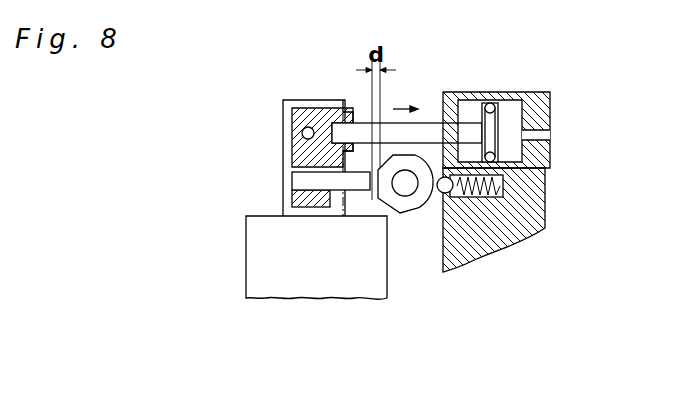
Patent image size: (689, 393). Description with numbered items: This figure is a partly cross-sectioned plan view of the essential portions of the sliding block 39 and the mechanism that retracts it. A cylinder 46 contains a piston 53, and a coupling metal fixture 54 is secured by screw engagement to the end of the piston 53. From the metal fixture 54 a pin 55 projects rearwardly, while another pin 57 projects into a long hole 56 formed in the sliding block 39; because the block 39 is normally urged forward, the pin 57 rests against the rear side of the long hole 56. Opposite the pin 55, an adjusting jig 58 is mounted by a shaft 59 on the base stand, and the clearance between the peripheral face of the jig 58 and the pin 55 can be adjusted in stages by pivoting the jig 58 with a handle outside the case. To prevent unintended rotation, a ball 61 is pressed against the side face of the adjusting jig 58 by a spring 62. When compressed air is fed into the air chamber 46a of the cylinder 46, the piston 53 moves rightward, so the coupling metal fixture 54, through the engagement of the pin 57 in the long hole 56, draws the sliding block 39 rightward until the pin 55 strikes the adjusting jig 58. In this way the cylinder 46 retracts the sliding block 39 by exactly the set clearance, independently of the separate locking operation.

The sliding block 39 is at (257, 253).
The cylinder 46 is at (518, 98).
The air chamber 46a is at (470, 104).
The piston 53 is at (427, 123).
The coupling metal fixture 54 is at (350, 107).
The pin 55 is at (297, 183).
The long hole 56 is at (285, 108).
The pin 57 is at (306, 127).
The adjusting jig 58 is at (421, 200).
The shaft 59 is at (403, 186).
The ball 61 is at (497, 243).
The spring 62 is at (462, 190).